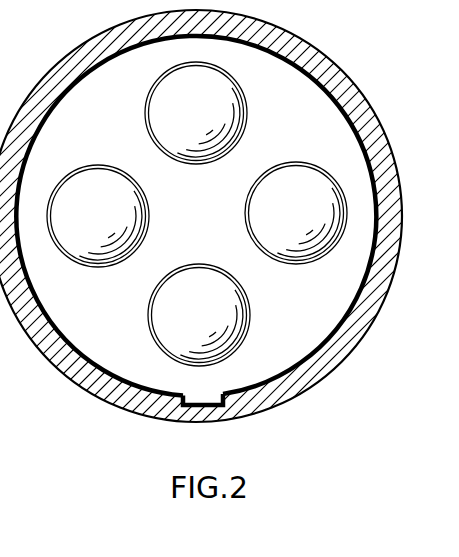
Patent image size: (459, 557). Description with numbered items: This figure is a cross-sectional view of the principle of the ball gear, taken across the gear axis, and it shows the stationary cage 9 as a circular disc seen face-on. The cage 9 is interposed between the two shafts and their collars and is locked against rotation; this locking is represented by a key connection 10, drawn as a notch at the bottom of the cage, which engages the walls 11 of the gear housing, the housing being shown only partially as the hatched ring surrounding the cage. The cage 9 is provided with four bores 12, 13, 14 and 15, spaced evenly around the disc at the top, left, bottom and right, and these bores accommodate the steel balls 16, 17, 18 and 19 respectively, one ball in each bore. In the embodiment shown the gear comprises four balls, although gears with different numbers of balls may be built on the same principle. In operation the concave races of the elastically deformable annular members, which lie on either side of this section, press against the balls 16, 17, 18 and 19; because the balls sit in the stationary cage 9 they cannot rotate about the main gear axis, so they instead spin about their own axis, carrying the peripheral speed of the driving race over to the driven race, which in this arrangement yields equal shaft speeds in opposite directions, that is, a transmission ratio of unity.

The cage 9 is at (84, 101).
The key connection 10 is at (217, 406).
The walls of a gear housing 11 is at (96, 50).
The bore 12 is at (146, 92).
The bore 13 is at (75, 174).
The bore 14 is at (150, 309).
The bore 15 is at (288, 265).
The steel ball 16 is at (219, 100).
The steel ball 17 is at (112, 189).
The steel ball 18 is at (203, 283).
The steel ball 19 is at (314, 189).